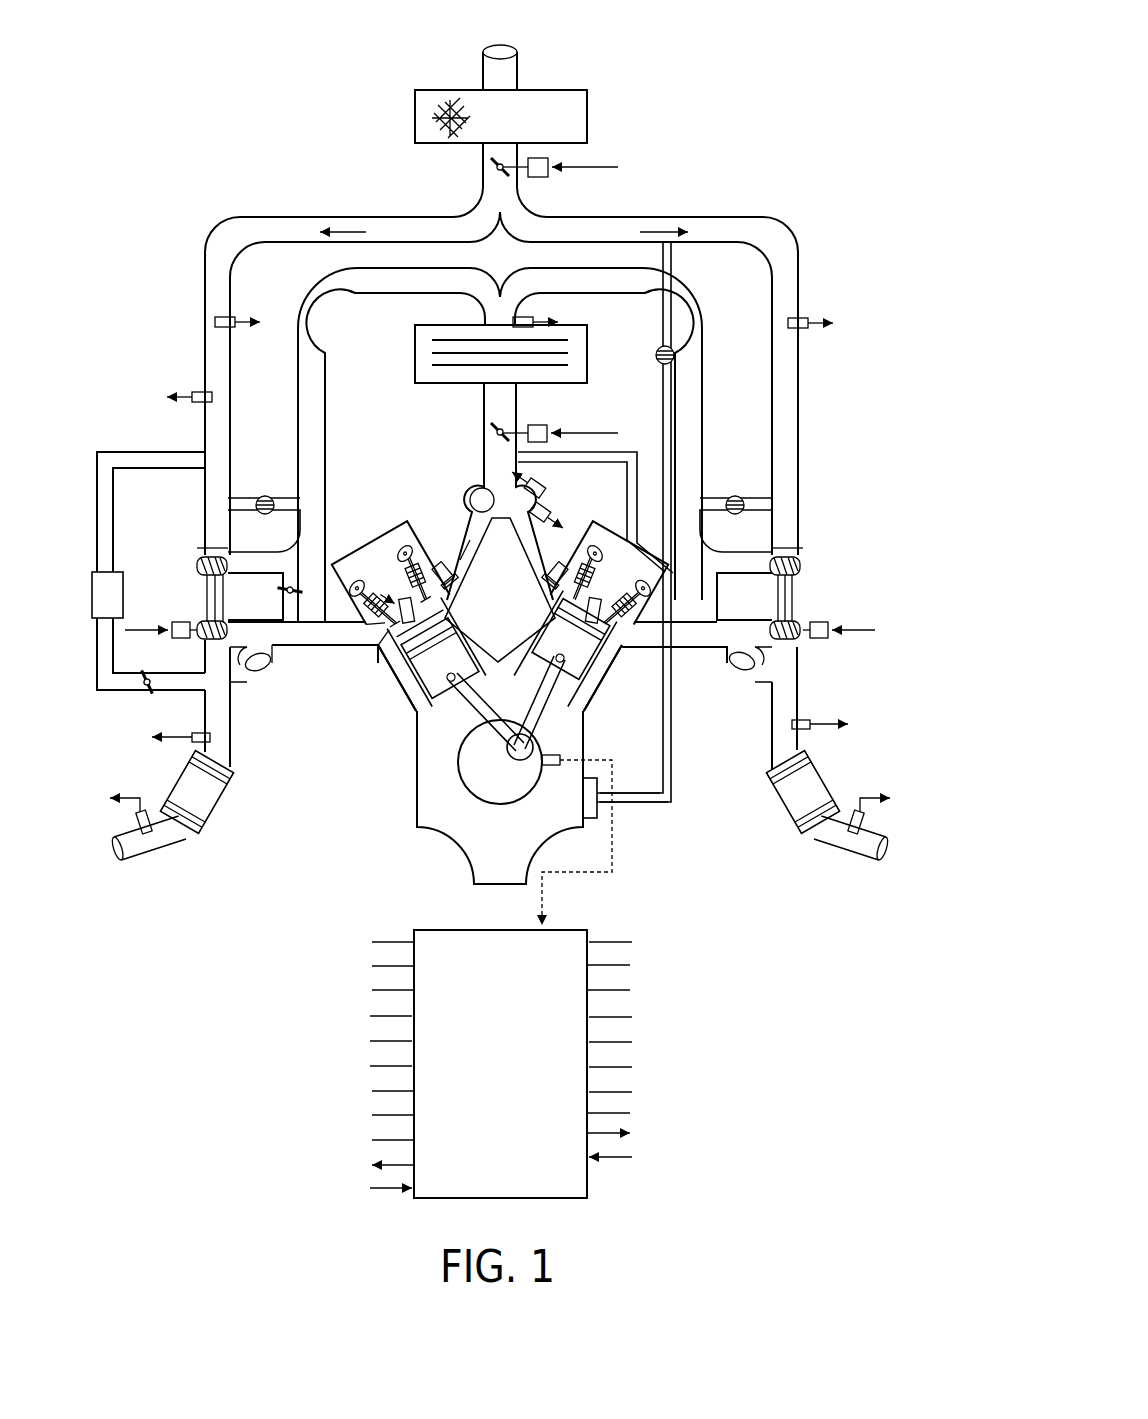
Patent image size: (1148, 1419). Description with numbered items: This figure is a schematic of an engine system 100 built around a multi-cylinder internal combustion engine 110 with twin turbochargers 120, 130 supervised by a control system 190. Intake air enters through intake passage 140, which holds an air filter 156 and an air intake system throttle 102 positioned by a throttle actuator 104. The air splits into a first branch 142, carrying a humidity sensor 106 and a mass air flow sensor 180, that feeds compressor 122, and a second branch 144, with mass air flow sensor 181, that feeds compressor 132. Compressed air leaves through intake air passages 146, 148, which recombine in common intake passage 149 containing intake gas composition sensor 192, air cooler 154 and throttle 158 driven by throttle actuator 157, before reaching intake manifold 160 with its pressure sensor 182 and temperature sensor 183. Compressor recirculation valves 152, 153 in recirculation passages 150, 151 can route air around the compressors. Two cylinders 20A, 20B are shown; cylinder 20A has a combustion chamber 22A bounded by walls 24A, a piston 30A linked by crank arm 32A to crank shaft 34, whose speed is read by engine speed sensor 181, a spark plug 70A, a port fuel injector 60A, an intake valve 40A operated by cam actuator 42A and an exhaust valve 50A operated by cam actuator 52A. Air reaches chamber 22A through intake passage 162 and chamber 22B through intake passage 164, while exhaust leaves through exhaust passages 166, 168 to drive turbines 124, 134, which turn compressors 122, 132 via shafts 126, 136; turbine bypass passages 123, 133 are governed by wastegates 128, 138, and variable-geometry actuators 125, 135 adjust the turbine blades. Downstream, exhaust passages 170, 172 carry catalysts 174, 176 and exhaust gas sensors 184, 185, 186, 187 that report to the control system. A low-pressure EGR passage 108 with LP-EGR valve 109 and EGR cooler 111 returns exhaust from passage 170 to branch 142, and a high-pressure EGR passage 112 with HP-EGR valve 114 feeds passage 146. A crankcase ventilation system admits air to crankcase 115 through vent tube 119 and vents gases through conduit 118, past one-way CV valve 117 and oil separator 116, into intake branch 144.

The engine system 100 is at (784, 27).
The air intake system throttle 102 is at (488, 161).
The AIS throttle actuator 104 is at (548, 160).
The humidity sensor 106 is at (229, 318).
The low-pressure EGR passage 108 is at (157, 451).
The LP-EGR valve 109 is at (150, 690).
The internal combustion engine 110 is at (432, 842).
The EGR cooler 111 is at (110, 600).
The high-pressure EGR passage 112 is at (300, 604).
The HP-EGR valve 114 is at (314, 590).
The crankcase 115 is at (515, 856).
The oil separator 116 is at (600, 815).
The one-way CV valve 117 is at (657, 350).
The crankcase ventilation conduit 118 is at (672, 763).
The vent tube 119 is at (633, 450).
The first turbocharger 120 is at (156, 584).
The compressor 122 is at (200, 565).
The turbine bypass passage 123 is at (237, 670).
The exhaust turbine 124 is at (199, 637).
The turbine actuator 125 is at (182, 622).
The shaft 126 is at (222, 600).
The wastegate 128 is at (268, 672).
The second turbocharger 130 is at (864, 582).
The compressor 132 is at (800, 565).
The turbine bypass passage 133 is at (752, 678).
The exhaust turbine 134 is at (803, 640).
The turbine actuator 135 is at (828, 622).
The shaft 136 is at (772, 603).
The wastegate 138 is at (718, 665).
The intake passage 140 is at (507, 74).
The first intake branch 142 is at (287, 227).
The second intake branch 144 is at (712, 228).
The intake air passage 146 is at (316, 377).
The intake air passage 148 is at (690, 377).
The common intake passage 149 is at (497, 452).
The recirculation passage 150 is at (264, 525).
The recirculation passage 151 is at (736, 525).
The first compressor recirculation valve 152 is at (266, 495).
The second compressor recirculation valve 153 is at (736, 495).
The air cooler 154 is at (578, 360).
The air filter 156 is at (568, 117).
The throttle actuator 157 is at (548, 428).
The throttle 158 is at (488, 430).
The intake manifold 160 is at (472, 494).
The intake passage 162 is at (500, 590).
The intake passage 164 is at (463, 552).
The exhaust passage 166 is at (305, 650).
The exhaust passage 168 is at (684, 623).
The exhaust passage 170 is at (226, 745).
The exhaust passage 172 is at (777, 745).
The catalyst 174 is at (195, 783).
The catalyst 176 is at (805, 783).
The mass air flow sensor 180 is at (190, 392).
The mass air flow sensor 181 is at (800, 318).
The intake manifold pressure sensor 182 is at (547, 490).
The intake manifold temperature sensor 183 is at (552, 514).
The exhaust gas composition sensor 184 is at (195, 733).
The exhaust gas composition sensor 185 is at (138, 822).
The exhaust gas sensor 186 is at (800, 720).
The exhaust gas sensor 187 is at (862, 822).
The control system 190 is at (515, 1076).
The intake gas composition sensor 192 is at (545, 314).
The cylinder 20A is at (418, 712).
The combustion chamber 22A is at (413, 660).
The combustion chamber walls 24A is at (433, 672).
The piston 30A is at (440, 690).
The crank arm 32A is at (477, 707).
The crank shaft 34 is at (495, 780).
The intake valve 40A is at (420, 550).
The intake valve actuator 42A is at (400, 520).
The exhaust valve 50A is at (420, 653).
The exhaust valve actuator 52A is at (360, 562).
The fuel injector 60A is at (466, 600).
The spark plug 70A is at (385, 560).
The cylinder 20B is at (583, 693).
The combustion chamber 22B is at (597, 667).